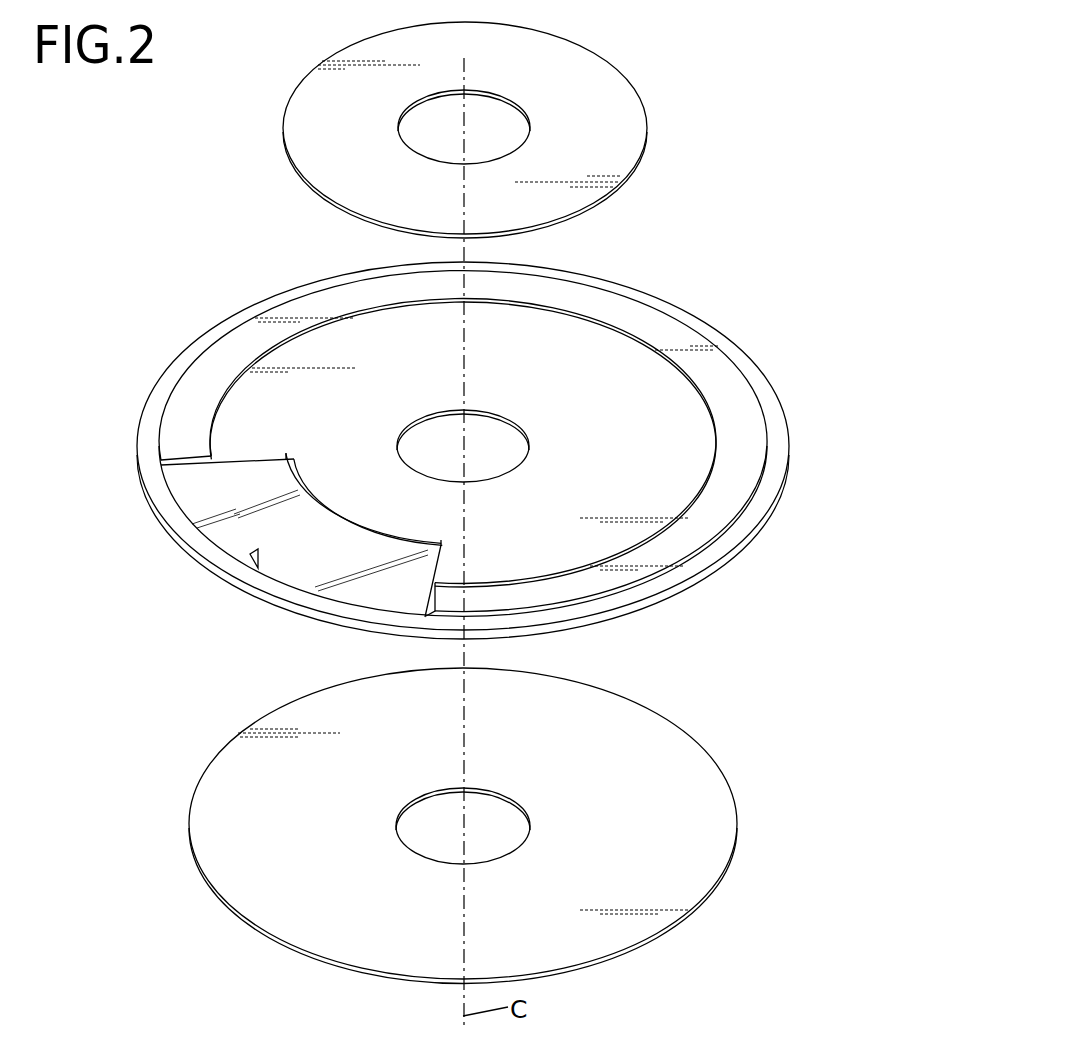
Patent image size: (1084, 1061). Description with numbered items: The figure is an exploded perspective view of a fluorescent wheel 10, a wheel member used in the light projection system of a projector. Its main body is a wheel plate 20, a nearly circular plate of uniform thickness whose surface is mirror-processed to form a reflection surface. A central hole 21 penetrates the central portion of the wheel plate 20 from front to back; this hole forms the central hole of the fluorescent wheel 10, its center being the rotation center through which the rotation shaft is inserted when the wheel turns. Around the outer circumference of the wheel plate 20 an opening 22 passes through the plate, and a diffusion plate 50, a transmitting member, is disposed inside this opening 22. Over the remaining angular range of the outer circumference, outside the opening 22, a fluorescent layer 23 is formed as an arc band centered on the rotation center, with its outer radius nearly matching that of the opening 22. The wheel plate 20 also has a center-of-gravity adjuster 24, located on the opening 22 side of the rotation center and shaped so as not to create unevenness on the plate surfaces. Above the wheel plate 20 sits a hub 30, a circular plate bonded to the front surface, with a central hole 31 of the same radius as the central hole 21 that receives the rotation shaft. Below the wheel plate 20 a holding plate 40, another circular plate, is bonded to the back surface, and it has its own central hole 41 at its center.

The fluorescent wheel 10 is at (830, 58).
The wheel plate 20 is at (777, 361).
The central hole 21 is at (417, 428).
The opening 22 is at (250, 554).
The fluorescent layer 23 is at (195, 383).
The center-of-gravity adjuster 24 is at (275, 606).
The hub 30 is at (665, 90).
The central hole 31 is at (421, 99).
The holding plate 40 is at (722, 736).
The central hole 41 is at (419, 797).
The diffusion plate 50 is at (188, 490).